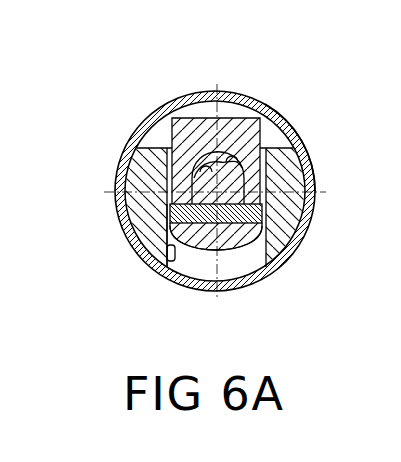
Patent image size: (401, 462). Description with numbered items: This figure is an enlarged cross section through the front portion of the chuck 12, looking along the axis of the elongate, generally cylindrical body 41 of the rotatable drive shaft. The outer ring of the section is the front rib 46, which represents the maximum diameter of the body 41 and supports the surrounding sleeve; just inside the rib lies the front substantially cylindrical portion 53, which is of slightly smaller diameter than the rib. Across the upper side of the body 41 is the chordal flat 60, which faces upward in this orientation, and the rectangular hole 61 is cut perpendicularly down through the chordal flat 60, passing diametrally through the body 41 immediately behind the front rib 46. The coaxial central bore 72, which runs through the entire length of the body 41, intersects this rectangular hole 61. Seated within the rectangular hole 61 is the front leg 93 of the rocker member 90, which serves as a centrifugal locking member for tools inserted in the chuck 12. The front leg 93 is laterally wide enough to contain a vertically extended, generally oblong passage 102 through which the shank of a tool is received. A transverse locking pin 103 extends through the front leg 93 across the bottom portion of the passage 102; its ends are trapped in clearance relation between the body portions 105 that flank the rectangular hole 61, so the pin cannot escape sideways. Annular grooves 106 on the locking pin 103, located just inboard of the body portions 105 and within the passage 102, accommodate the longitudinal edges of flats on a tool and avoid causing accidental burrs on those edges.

The chuck 12 is at (94, 92).
The body 41 is at (150, 147).
The front rib 46 is at (270, 112).
The front substantially cylindrical portion 53 is at (282, 237).
The chordal flat 60 is at (297, 130).
The rectangular hole 61 is at (172, 272).
The central bore 72 is at (200, 167).
The rocker member 90 is at (224, 101).
The front leg 93 is at (202, 240).
The passage 102 is at (238, 157).
The locking pin 103 is at (272, 214).
The body portions 105 is at (136, 234).
The annular grooves 106 is at (237, 237).